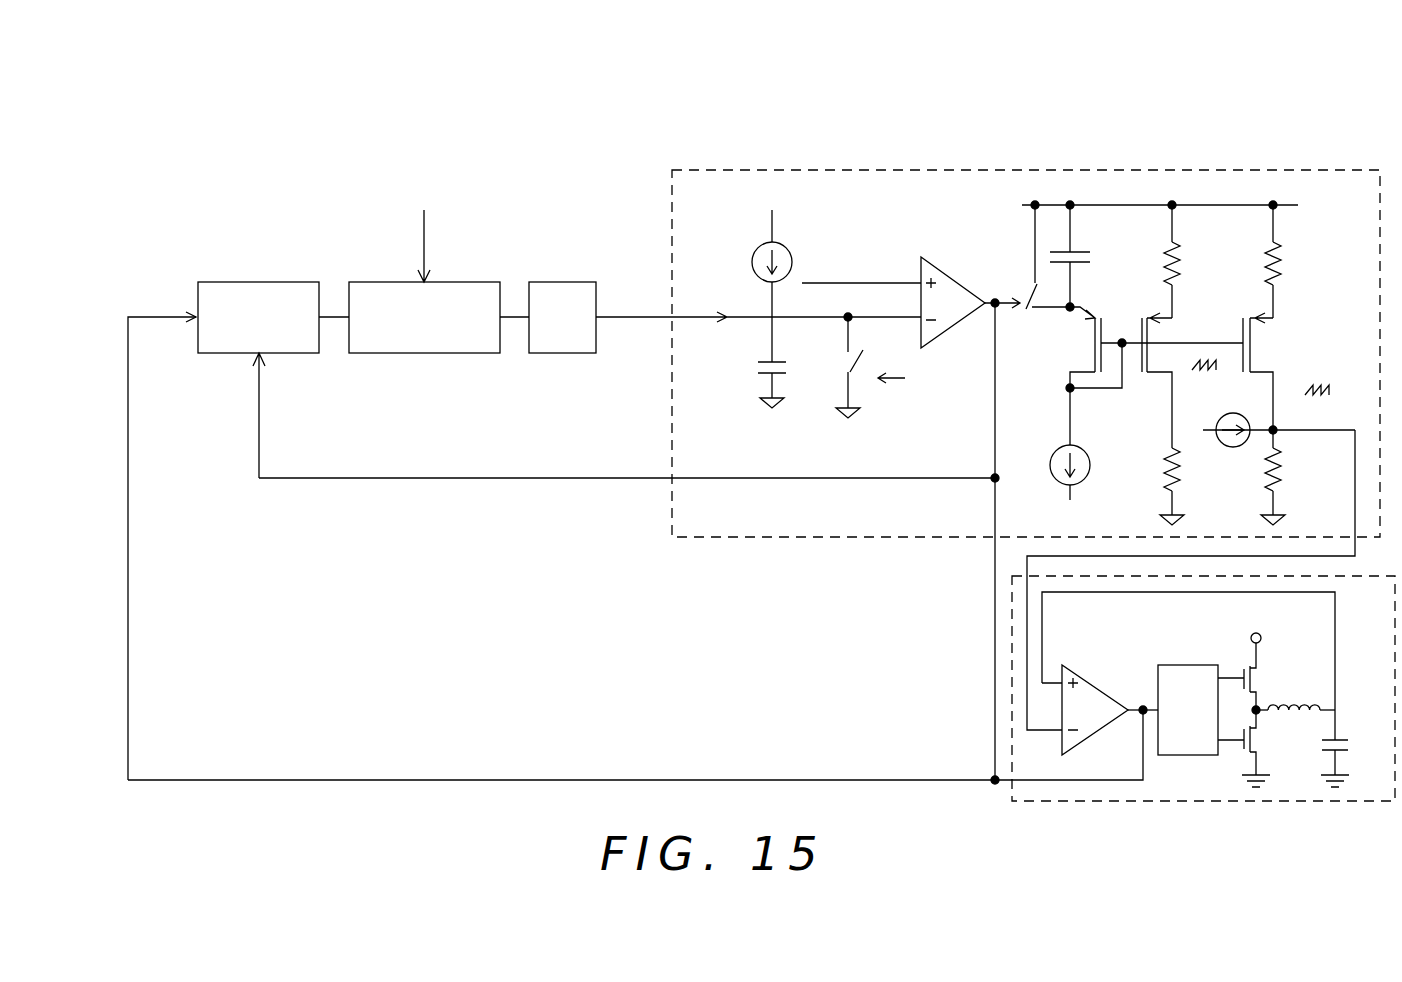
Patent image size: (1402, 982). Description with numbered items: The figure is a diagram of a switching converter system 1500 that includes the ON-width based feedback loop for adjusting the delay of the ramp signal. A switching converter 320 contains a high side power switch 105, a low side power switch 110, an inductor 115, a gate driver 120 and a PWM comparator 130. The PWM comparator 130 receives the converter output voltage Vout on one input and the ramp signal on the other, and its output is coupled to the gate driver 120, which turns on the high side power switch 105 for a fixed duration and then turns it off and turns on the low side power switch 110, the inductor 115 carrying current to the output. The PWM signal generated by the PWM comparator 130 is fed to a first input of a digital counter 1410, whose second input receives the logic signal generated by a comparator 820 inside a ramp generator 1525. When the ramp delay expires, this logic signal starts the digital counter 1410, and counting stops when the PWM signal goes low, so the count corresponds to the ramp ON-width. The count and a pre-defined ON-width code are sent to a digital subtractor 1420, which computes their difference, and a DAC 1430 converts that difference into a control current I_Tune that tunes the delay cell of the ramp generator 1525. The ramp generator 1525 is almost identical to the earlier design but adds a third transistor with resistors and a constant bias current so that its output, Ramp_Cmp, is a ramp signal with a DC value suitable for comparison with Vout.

The switching converter system 1500 is at (293, 107).
The digital counter 1410 is at (222, 362).
The digital subtractor 1420 is at (408, 360).
The DAC 1430 is at (568, 360).
The ramp generator 1525 is at (973, 165).
The comparator 820 is at (955, 275).
The switching converter 320 is at (1040, 802).
The PWM comparator 130 is at (1098, 684).
The gate driver 120 is at (1188, 710).
The high side power switch 105 is at (1257, 675).
The low side power switch 110 is at (1266, 740).
The inductor 115 is at (1296, 696).